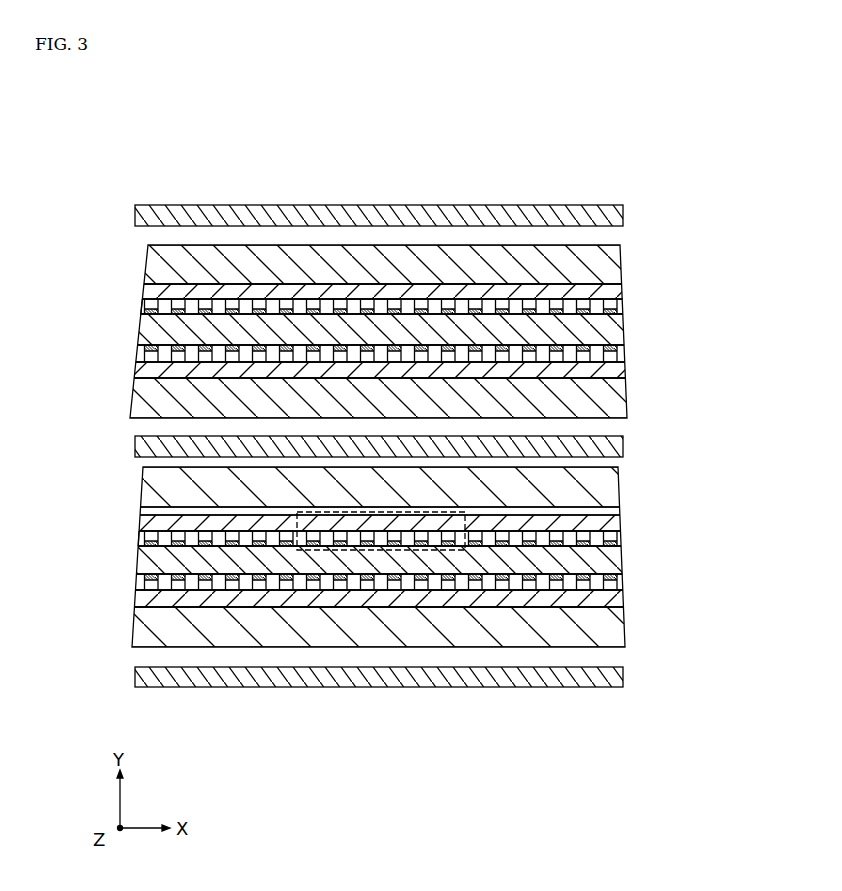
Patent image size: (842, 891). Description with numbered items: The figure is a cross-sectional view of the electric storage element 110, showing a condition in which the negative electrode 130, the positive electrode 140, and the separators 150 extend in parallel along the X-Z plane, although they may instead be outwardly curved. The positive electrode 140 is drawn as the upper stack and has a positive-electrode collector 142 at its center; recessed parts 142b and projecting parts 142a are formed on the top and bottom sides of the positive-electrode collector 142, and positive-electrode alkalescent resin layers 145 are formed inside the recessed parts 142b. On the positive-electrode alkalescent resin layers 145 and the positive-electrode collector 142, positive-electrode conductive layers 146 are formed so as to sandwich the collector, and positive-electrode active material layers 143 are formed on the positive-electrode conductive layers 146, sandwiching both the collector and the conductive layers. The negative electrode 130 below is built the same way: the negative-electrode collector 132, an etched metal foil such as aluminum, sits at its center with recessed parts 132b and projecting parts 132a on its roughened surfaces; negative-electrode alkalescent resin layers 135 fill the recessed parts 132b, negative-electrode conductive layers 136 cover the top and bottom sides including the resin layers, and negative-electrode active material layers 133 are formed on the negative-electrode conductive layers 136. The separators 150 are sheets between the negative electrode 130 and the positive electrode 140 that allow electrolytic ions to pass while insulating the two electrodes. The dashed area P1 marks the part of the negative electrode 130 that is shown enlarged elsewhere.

The electric storage element 110 is at (594, 157).
The negative electrode 130 is at (431, 578).
The negative-electrode collector 132 is at (618, 558).
The projecting parts 132a is at (567, 543).
The recessed parts 132b is at (143, 523).
The negative-electrode active material layers 133 is at (610, 487).
The negative-electrode alkalescent resin layers 135 is at (615, 544).
The negative-electrode conductive layers 136 is at (613, 512).
The positive electrode 140 is at (431, 316).
The positive-electrode collector 142 is at (618, 328).
The projecting parts 142a is at (567, 310).
The recessed parts 142b is at (143, 291).
The positive-electrode active material layers 143 is at (610, 265).
The positive-electrode alkalescent resin layers 145 is at (615, 314).
The positive-electrode conductive layers 146 is at (613, 290).
The separators 150 is at (136, 222).
The area P1 is at (300, 548).